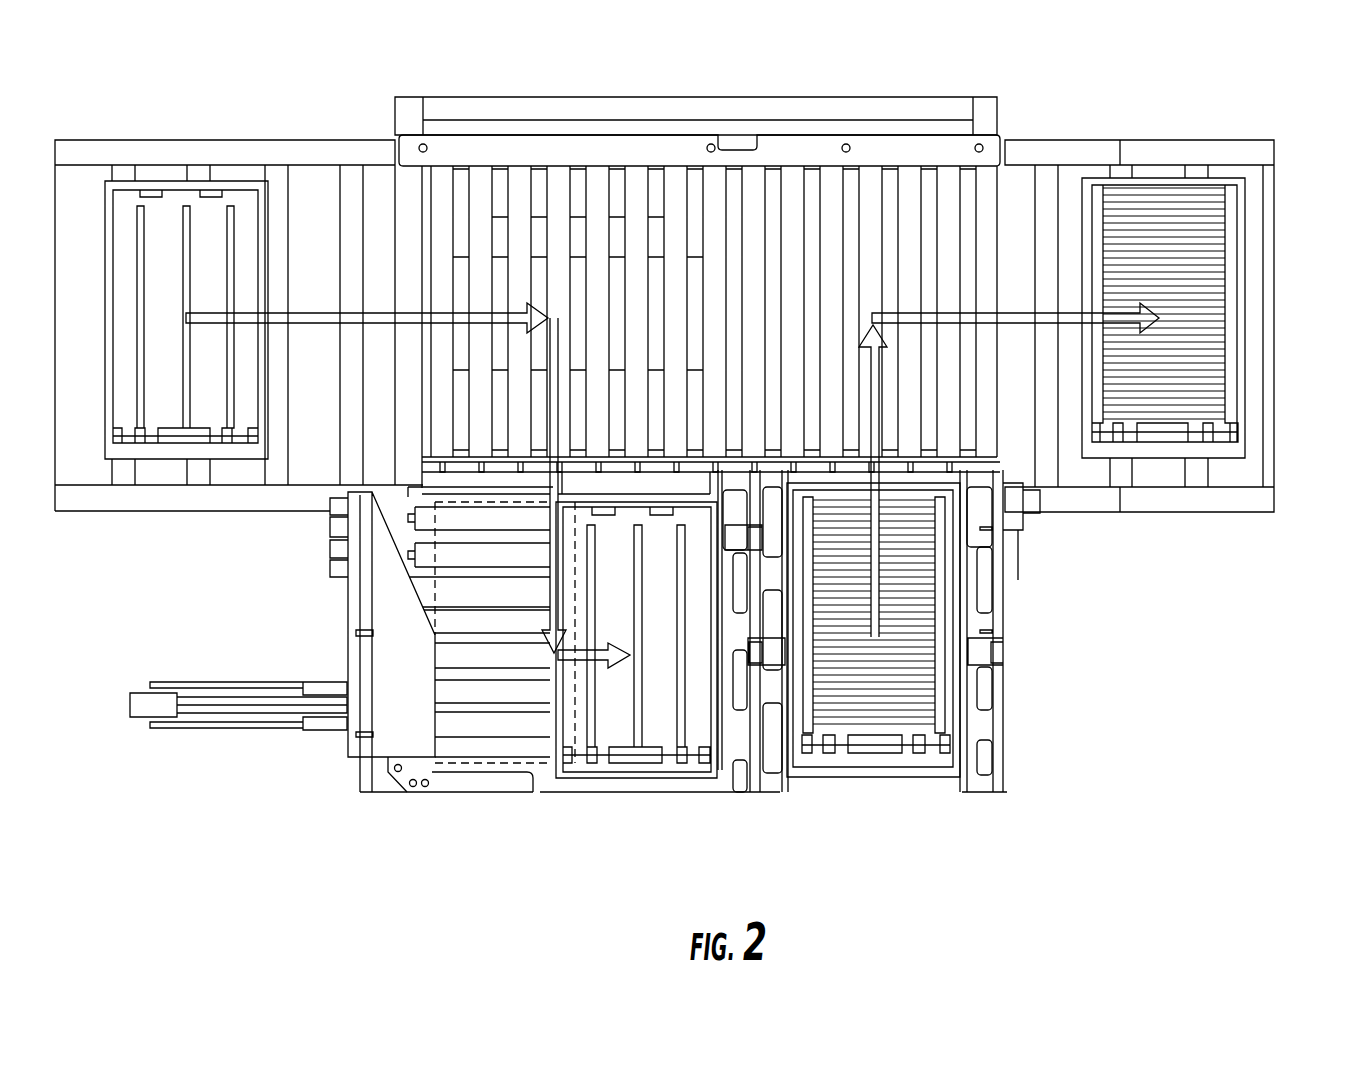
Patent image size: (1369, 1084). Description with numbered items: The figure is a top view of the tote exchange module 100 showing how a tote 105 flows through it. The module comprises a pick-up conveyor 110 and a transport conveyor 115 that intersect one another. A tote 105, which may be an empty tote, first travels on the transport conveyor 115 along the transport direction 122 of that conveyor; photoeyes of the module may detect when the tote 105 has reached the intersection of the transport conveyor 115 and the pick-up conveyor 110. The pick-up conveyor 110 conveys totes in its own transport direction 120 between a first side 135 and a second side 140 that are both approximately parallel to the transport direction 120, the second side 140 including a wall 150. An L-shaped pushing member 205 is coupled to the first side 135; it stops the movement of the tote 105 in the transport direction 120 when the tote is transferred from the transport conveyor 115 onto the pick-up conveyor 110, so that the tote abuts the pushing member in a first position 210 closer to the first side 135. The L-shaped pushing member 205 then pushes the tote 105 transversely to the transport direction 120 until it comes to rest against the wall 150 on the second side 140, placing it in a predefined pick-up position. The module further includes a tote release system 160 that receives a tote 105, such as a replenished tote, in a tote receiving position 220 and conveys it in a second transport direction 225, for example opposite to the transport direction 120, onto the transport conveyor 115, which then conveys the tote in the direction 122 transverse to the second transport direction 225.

The tote exchange module 100 is at (1318, 120).
The tote 105 is at (197, 225).
The pick-up conveyor 110 is at (463, 740).
The transport conveyor 115 is at (624, 195).
The transport direction 120 is at (553, 558).
The transport direction of the transport conveyor 122 is at (325, 322).
The first side 135 is at (356, 757).
The second side 140 is at (715, 760).
The wall 150 is at (717, 637).
The tote release system 160 is at (970, 733).
The L-shaped pushing member 205 is at (482, 784).
The first position 210 is at (540, 763).
The tote receiving position 220 is at (883, 708).
The second transport direction 225 is at (873, 592).